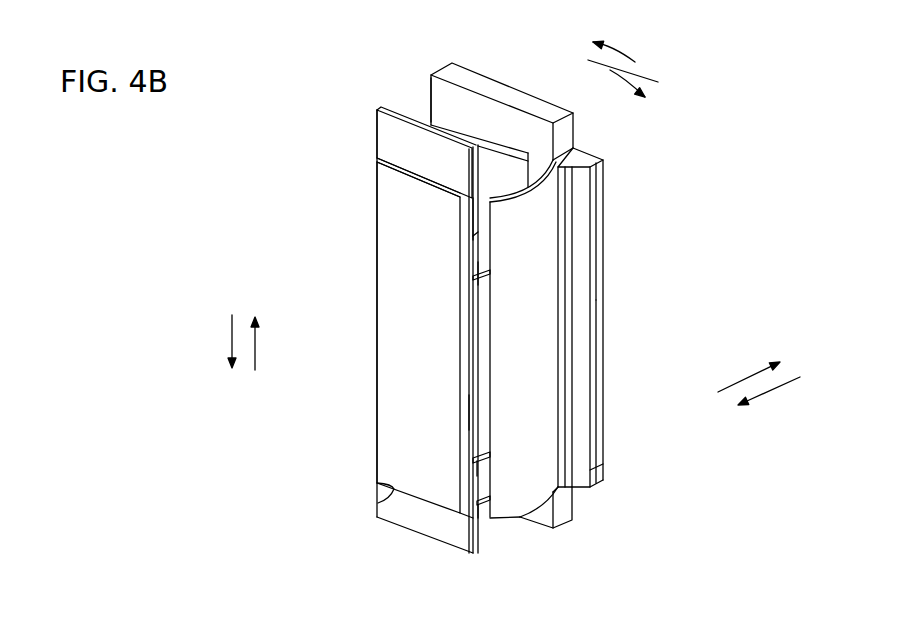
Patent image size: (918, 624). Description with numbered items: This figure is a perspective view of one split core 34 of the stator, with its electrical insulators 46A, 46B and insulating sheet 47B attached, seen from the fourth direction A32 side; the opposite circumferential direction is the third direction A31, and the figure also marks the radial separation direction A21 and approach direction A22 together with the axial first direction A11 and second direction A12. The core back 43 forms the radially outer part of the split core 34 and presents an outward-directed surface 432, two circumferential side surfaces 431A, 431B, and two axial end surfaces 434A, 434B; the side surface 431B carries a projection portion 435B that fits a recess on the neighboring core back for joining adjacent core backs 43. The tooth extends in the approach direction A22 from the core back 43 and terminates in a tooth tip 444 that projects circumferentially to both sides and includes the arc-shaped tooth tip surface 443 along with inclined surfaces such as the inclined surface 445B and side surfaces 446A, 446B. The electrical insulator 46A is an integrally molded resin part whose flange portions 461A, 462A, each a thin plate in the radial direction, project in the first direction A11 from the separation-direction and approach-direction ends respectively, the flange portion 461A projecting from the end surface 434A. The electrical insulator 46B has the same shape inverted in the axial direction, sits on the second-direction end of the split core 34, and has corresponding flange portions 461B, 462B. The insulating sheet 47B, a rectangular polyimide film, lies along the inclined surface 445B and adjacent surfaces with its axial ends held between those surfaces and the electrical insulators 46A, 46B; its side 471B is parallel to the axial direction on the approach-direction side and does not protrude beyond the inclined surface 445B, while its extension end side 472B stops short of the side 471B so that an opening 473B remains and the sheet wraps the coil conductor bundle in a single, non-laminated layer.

The tooth tip surface 443 is at (440, 358).
The insulating sheet 47B is at (543, 358).
The flange portion 461A is at (493, 85).
The electrical insulator 46A is at (463, 122).
The side surface 431A is at (427, 105).
The flange portion 462A is at (383, 130).
The tooth tip 444 is at (376, 161).
The split core 34 is at (321, 203).
The inclined surface 445B is at (468, 242).
The side surface 446A is at (471, 272).
The opening 473B is at (472, 276).
The side 471B is at (470, 410).
The side 472B is at (476, 441).
The side surface 446B is at (470, 469).
The flange portion 462B is at (436, 541).
The electrical insulator 46B is at (484, 519).
The flange portion 461B is at (574, 507).
The core back 43 is at (630, 211).
The end surface 434A is at (594, 154).
The projection portion 435B is at (598, 181).
The outward-directed surface 432 is at (604, 238).
The side surface 431B is at (604, 300).
The end surface 434B is at (594, 484).
The fourth direction A32 is at (658, 52).
The third direction A31 is at (620, 77).
The separation direction A21 is at (752, 373).
The approach direction A22 is at (782, 403).
The second direction A12 is at (230, 342).
The first direction A11 is at (257, 343).